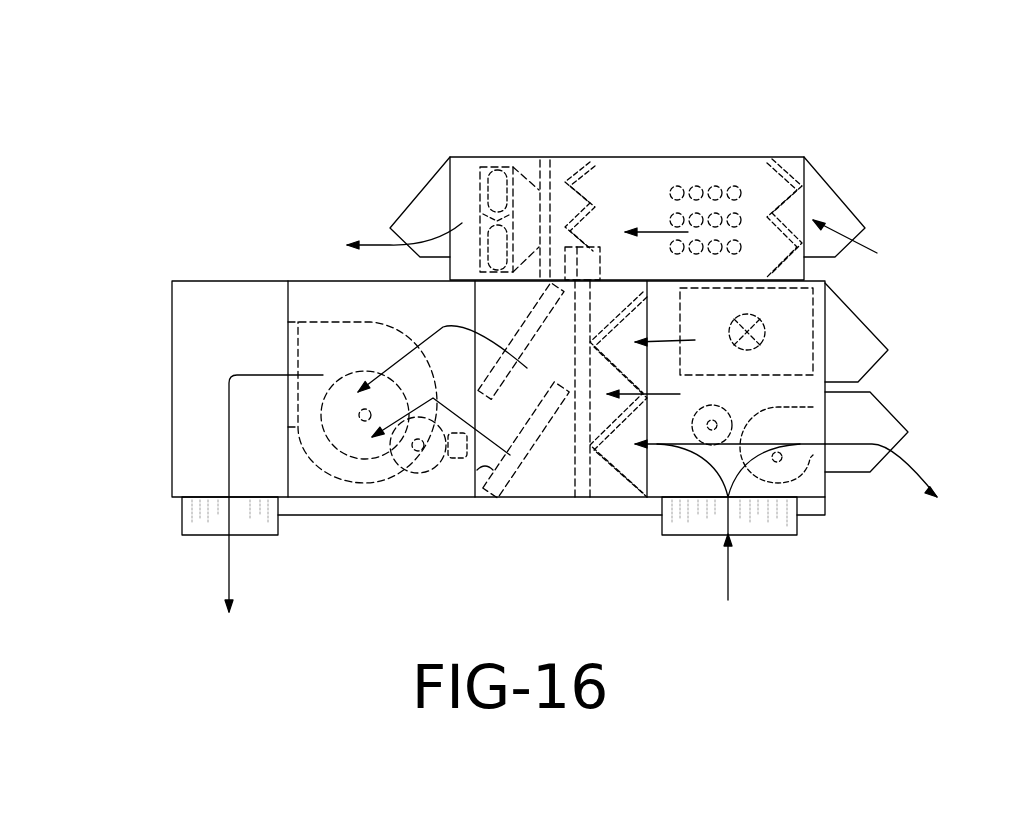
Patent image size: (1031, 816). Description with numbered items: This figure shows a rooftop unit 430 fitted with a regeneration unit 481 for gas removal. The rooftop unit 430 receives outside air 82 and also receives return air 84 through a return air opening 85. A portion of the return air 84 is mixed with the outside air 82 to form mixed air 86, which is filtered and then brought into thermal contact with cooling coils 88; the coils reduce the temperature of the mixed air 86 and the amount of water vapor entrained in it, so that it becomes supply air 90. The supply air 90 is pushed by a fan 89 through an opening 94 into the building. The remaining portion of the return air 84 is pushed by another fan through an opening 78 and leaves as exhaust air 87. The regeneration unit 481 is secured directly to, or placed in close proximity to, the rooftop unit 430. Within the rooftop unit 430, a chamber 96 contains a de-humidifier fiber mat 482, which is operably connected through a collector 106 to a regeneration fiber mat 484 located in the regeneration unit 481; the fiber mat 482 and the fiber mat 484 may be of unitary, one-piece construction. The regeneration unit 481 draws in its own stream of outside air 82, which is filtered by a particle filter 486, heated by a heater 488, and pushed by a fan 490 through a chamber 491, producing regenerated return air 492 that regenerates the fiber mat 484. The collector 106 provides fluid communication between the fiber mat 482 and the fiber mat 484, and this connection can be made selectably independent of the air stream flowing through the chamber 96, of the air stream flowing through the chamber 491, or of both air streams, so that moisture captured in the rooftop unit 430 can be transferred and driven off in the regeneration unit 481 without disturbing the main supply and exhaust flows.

The rooftop unit 430 is at (205, 278).
The regeneration unit 481 is at (457, 113).
The fan 490 is at (498, 193).
The regenerated return air 492 is at (388, 243).
The regeneration fiber mat 484 is at (573, 167).
The collector 106 is at (601, 258).
The heater 488 is at (732, 183).
The chamber 491 is at (653, 198).
The particle filter 486 is at (790, 175).
The outside air 82 is at (877, 253).
The mixed air 86 is at (680, 394).
The opening 78 is at (907, 438).
The exhaust air 87 is at (925, 490).
The return air 84 is at (730, 572).
The return air opening 85 is at (773, 535).
The opening 94 is at (182, 534).
The fan 89 is at (340, 462).
The supply air 90 is at (433, 398).
The cooling coils 88 is at (530, 323).
The chamber 96 is at (575, 432).
The de-humidifier fiber mat 482 is at (577, 430).